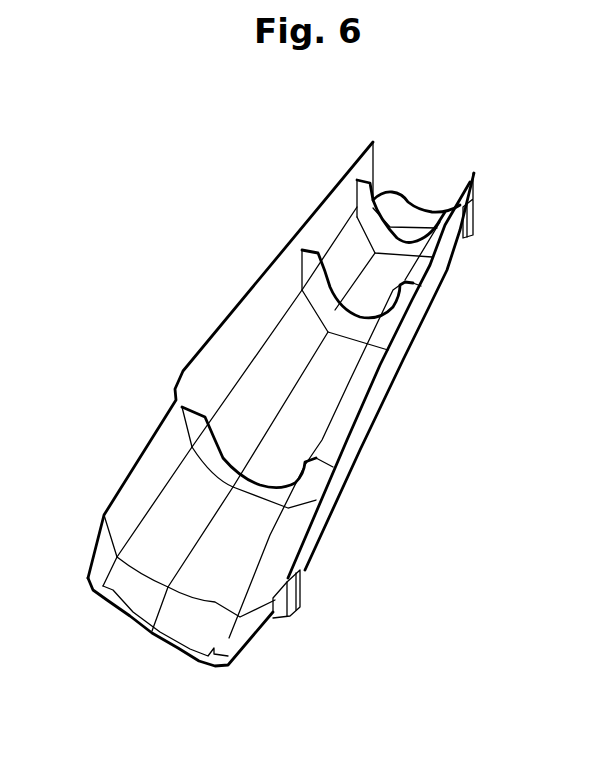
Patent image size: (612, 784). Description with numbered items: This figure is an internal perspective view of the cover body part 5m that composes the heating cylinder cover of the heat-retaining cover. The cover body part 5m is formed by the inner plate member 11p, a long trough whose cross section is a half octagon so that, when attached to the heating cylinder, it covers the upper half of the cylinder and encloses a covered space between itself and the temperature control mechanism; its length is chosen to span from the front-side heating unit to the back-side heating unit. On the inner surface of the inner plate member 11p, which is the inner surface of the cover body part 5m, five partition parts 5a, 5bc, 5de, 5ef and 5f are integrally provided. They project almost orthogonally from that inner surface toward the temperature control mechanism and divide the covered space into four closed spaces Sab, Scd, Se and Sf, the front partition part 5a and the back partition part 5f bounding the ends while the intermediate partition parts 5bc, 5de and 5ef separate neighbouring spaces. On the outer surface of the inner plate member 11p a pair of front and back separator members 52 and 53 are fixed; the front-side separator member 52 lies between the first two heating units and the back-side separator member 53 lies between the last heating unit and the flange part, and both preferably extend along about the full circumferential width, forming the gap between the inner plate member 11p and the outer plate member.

The inner plate member 11p is at (376, 434).
The cover body part 5m is at (415, 375).
The partition part 5a is at (95, 574).
The partition part 5bc is at (177, 378).
The partition part 5de is at (317, 250).
The partition part 5ef is at (360, 174).
The partition part 5f is at (412, 197).
The closed space Sab is at (174, 484).
The closed space Scd is at (248, 386).
The closed space Se is at (375, 289).
The closed space Sf is at (411, 233).
The front-side separator member 52 is at (300, 598).
The back-side separator member 53 is at (477, 234).